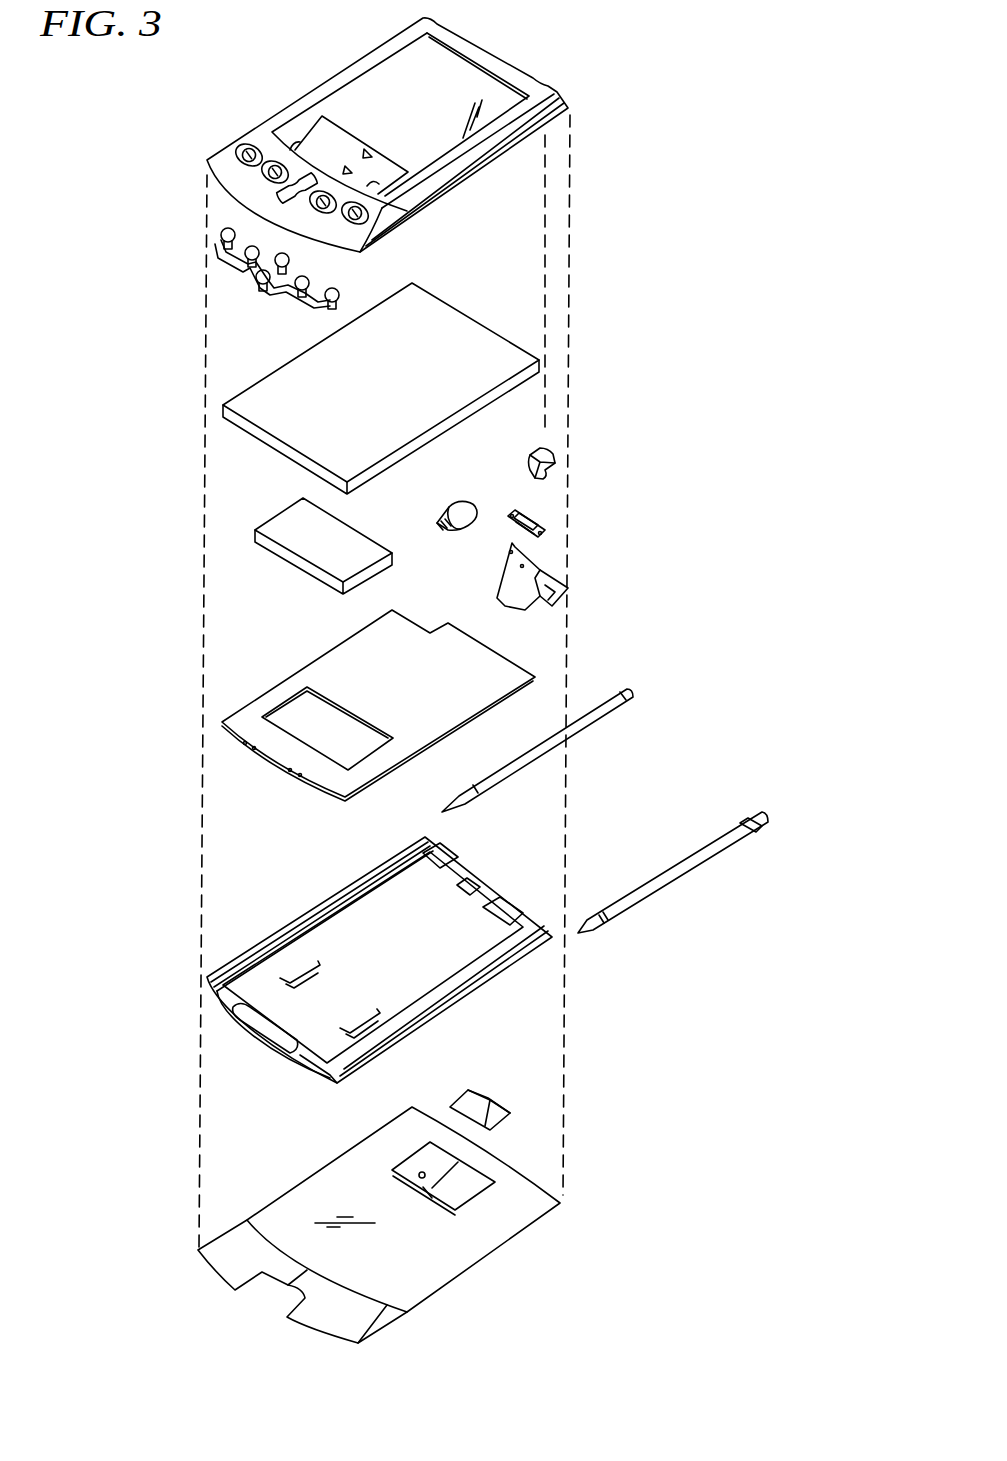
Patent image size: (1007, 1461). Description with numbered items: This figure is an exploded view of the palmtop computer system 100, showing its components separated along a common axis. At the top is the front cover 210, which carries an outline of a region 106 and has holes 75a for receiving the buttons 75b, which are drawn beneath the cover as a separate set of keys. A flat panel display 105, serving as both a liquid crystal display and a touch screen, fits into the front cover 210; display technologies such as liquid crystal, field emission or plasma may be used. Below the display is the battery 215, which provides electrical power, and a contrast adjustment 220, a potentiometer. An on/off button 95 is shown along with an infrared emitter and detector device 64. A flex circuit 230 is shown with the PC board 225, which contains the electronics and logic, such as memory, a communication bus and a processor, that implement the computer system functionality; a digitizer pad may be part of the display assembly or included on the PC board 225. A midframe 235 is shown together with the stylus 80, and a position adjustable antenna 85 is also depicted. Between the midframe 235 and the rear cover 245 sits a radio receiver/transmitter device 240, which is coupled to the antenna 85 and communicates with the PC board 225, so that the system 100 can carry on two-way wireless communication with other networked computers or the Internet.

The palmtop computer system 100 is at (98, 81).
The front cover 210 is at (575, 104).
The region 106 is at (311, 132).
The holes 75a is at (247, 151).
The buttons 75b is at (228, 229).
The flat panel display 105 is at (229, 397).
The battery 215 is at (257, 525).
The contrast adjustment 220 is at (458, 499).
The on/off button 95 is at (559, 451).
The infrared emitter and detector device 64 is at (548, 520).
The flex circuit 230 is at (560, 577).
The PC board 225 is at (227, 707).
The position adjustable antenna 85 is at (638, 692).
The stylus 80 is at (762, 806).
The midframe 235 is at (522, 978).
The radio receiver/transmitter device 240 is at (494, 1096).
The rear cover 245 is at (519, 1232).